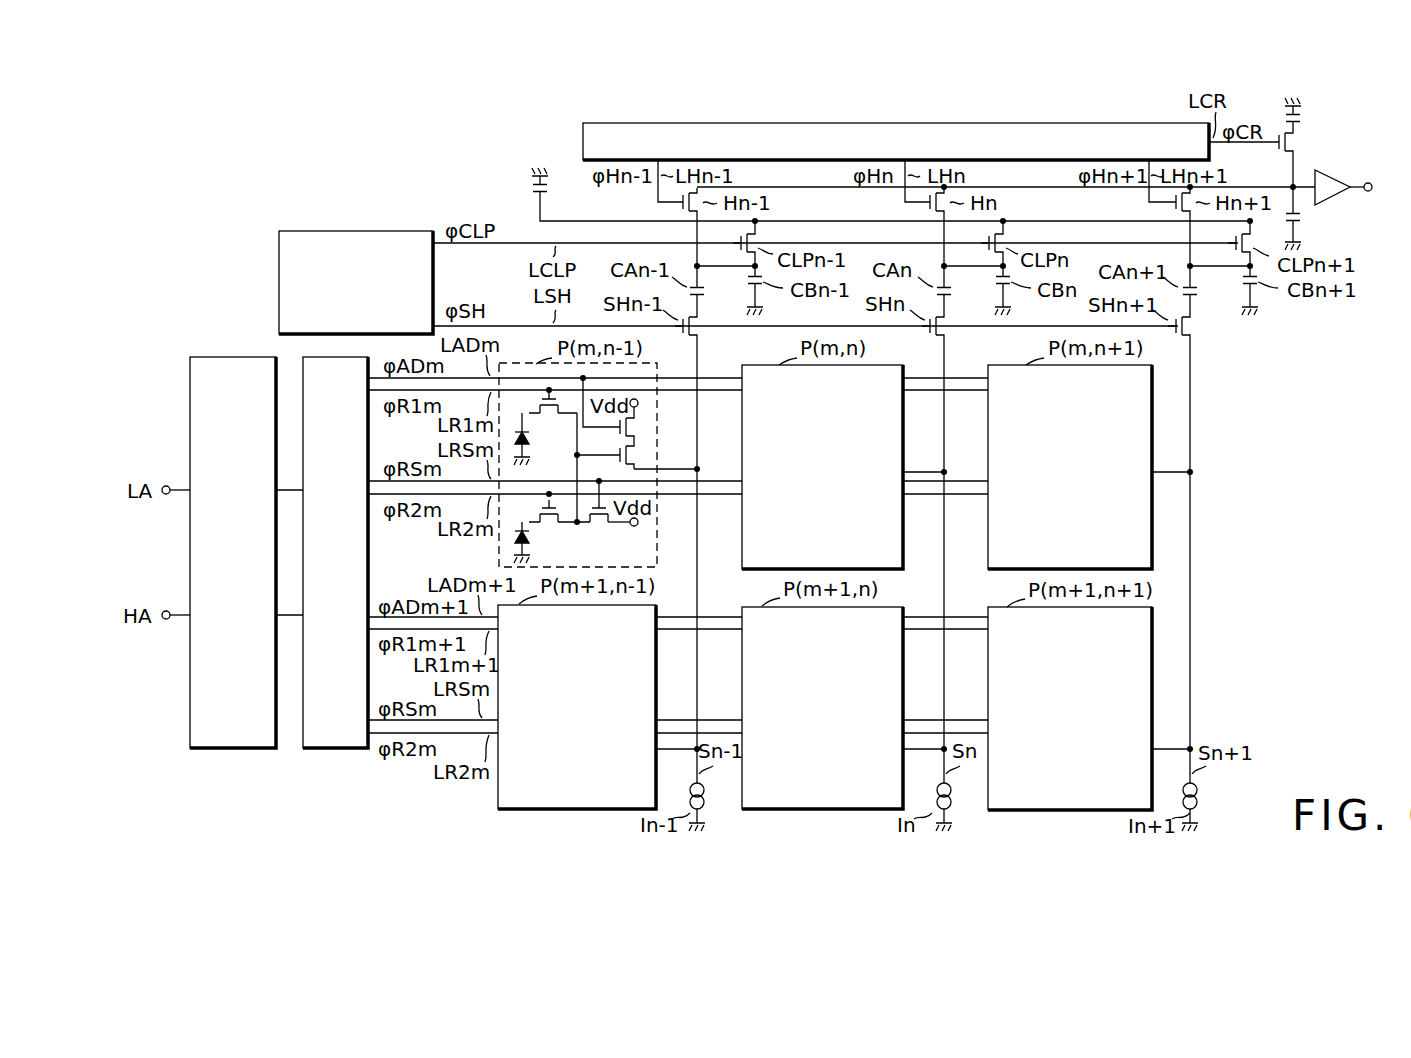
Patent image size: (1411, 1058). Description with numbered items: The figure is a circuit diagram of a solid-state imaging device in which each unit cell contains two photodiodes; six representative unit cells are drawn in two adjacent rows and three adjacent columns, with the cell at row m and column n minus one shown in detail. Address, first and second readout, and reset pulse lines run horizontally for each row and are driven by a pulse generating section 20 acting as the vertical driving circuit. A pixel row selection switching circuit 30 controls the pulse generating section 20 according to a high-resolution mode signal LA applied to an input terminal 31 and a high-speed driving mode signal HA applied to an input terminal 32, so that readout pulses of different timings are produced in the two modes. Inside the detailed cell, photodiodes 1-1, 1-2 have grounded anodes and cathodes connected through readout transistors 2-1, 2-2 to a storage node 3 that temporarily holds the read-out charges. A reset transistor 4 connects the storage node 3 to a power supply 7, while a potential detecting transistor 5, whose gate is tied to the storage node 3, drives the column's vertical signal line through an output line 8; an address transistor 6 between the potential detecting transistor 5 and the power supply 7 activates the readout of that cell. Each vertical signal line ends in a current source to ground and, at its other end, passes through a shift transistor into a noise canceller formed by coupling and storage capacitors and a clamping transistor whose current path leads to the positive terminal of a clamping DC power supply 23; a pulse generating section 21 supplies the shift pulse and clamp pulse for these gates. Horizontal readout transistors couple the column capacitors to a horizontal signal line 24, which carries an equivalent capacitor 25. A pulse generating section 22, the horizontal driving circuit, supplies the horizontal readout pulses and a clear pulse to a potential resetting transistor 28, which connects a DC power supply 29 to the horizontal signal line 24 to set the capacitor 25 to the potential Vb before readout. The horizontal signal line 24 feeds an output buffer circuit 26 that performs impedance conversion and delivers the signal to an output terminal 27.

The photodiode 1-1 is at (543, 445).
The photodiode 1-2 is at (514, 540).
The readout transistor 2-1 is at (554, 410).
The readout transistor 2-2 is at (552, 520).
The storage node 3 is at (580, 458).
The reset transistor 4 is at (600, 520).
The potential detecting transistor 5 is at (640, 456).
The address transistor 6 is at (640, 428).
The power supply 7 is at (638, 404).
The output line 8 is at (699, 468).
The pulse generating section 20 is at (337, 750).
The pulse generating section 21 is at (362, 231).
The pulse generating section 22 is at (1093, 123).
The clamping DC power supply 23 is at (527, 192).
The horizontal signal line 24 is at (1255, 183).
The capacitor 25 is at (1302, 226).
The output buffer circuit 26 is at (1340, 200).
The output terminal 27 is at (1370, 183).
The potential resetting transistor 28 is at (1300, 146).
The DC power supply 29 is at (1305, 118).
The pixel row selection switching circuit 30 is at (234, 356).
The input terminal 31 is at (166, 485).
The input terminal 32 is at (166, 610).